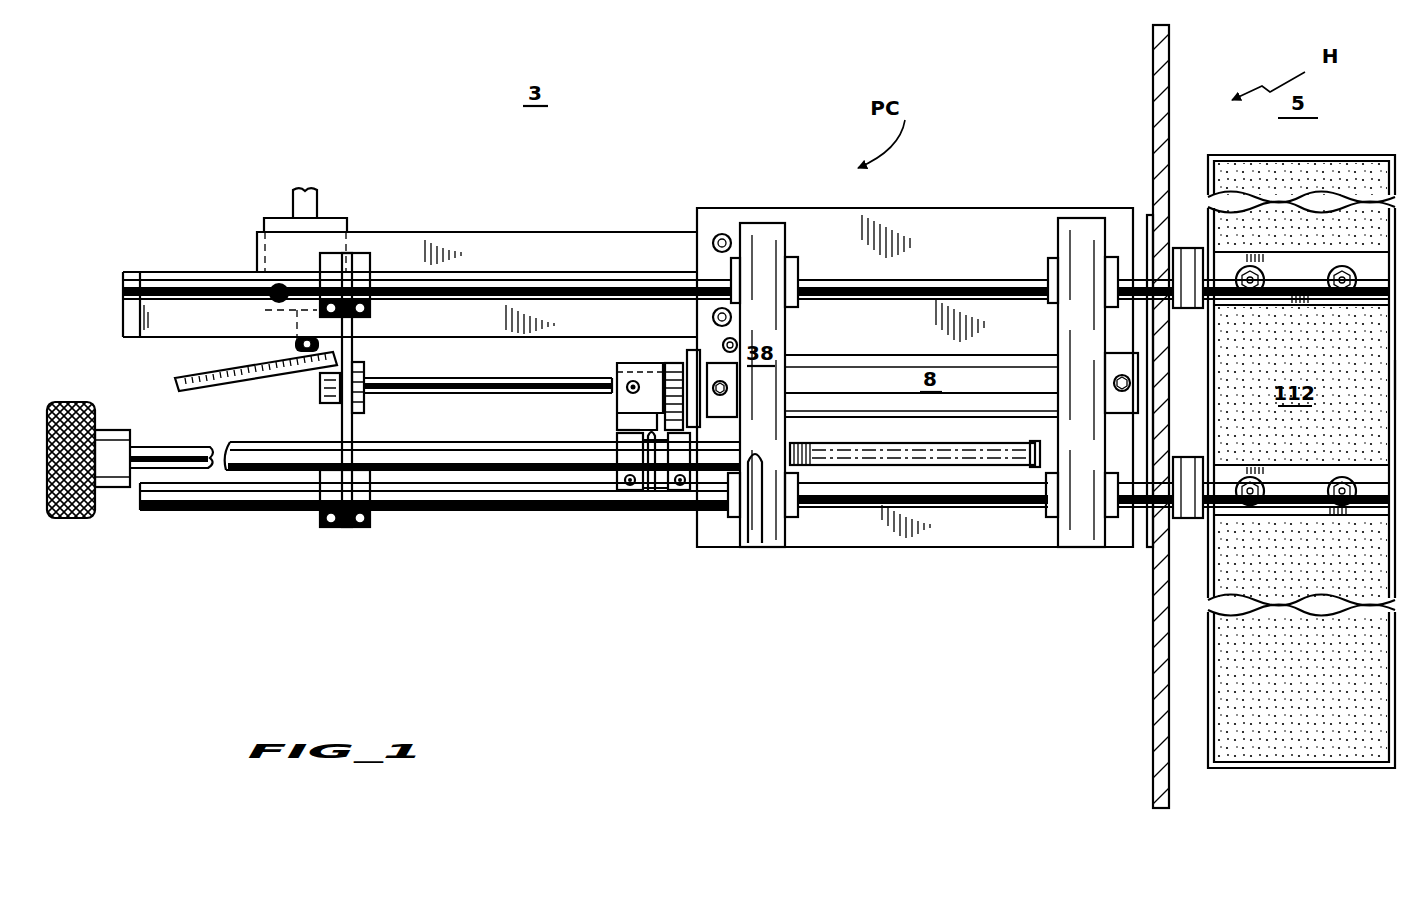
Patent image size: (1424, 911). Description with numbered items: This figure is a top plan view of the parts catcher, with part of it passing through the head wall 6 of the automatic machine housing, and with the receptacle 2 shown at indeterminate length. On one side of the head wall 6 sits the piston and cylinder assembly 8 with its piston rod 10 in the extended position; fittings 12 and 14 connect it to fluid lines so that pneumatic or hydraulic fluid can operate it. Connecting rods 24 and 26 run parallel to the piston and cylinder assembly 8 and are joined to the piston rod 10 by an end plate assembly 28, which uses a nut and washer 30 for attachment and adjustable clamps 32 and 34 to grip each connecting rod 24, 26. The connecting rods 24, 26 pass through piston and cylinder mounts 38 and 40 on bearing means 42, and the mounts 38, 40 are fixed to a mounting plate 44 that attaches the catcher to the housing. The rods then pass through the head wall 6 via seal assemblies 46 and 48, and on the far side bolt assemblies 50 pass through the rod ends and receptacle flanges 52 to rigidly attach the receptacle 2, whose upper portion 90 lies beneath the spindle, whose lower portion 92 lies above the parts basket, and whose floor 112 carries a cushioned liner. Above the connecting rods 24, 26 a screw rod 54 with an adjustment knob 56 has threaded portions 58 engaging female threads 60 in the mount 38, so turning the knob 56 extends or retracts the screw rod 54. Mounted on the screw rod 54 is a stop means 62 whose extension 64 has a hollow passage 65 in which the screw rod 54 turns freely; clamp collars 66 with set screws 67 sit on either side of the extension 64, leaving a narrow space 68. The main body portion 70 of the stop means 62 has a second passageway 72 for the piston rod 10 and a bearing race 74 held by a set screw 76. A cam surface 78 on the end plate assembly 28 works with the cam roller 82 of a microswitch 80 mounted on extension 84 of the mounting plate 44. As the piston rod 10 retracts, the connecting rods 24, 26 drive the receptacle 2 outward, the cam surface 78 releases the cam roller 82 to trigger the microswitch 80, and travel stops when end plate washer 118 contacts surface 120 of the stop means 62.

The receptacle 2 is at (1396, 378).
The head wall 6 is at (1168, 105).
The piston and cylinder assembly 8 is at (921, 386).
The piston rod 10 is at (440, 380).
The fitting 12 is at (712, 380).
The fitting 14 is at (1125, 378).
The connecting rod 24 is at (555, 276).
The connecting rod 26 is at (470, 512).
The end plate assembly 28 is at (352, 440).
The nut and washer 30 is at (320, 395).
The clamp 32 is at (372, 525).
The clamp 34 is at (362, 255).
The piston and cylinder mount 38 is at (762, 385).
The piston and cylinder mount 40 is at (1080, 340).
The bearing means 42 is at (792, 268).
The mounting plate 44 is at (933, 240).
The seal assembly 46 is at (1183, 520).
The seal assembly 48 is at (1178, 247).
The bolt assemblies 50 is at (1250, 297).
The receptacle flanges 52 is at (1370, 265).
The screw rod 54 is at (448, 443).
The adjustment knob 56 is at (72, 520).
The threaded portions 58 is at (800, 447).
The female threads 60 is at (750, 545).
The stop means 62 is at (636, 352).
The stop means extension 64 is at (652, 470).
The hollow passage 65 is at (650, 490).
The clamp collars 66 is at (617, 470).
The set screws 67 is at (632, 490).
The narrow space 68 is at (600, 447).
The main body portion 70 is at (617, 370).
The second passageway 72 is at (665, 370).
The bearing race 74 is at (617, 406).
The set screw 76 is at (617, 388).
The cam surface 78 is at (266, 380).
The microswitch 80 is at (282, 230).
The cam roller 82 is at (292, 343).
The extension 84 is at (487, 247).
The upper portion 90 is at (1393, 160).
The lower portion 92 is at (1395, 765).
The floor 112 is at (1301, 385).
The end plate washer 118 is at (364, 373).
The surface 120 is at (617, 420).